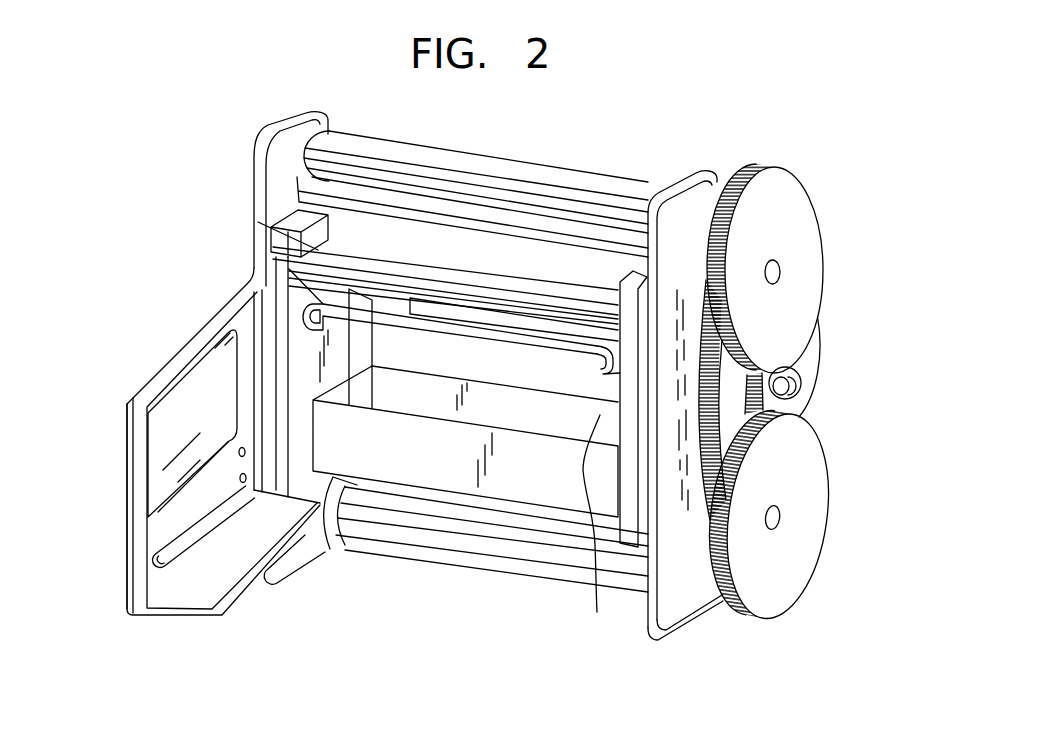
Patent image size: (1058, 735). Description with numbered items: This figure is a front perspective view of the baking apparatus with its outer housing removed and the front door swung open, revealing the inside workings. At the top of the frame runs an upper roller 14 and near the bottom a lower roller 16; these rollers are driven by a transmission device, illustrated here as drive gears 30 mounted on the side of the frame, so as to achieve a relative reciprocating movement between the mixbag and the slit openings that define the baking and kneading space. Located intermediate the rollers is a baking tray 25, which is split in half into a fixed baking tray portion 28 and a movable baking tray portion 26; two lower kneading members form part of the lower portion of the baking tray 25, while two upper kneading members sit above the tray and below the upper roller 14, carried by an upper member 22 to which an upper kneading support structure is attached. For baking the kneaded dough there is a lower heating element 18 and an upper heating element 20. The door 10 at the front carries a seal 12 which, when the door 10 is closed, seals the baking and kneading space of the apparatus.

The door 10 is at (172, 363).
The seal 12 is at (137, 474).
The upper roller 14 is at (489, 170).
The lower roller 16 is at (486, 551).
The lower heating element 18 is at (163, 560).
The upper heating element 20 is at (312, 272).
The upper member 22 is at (316, 255).
The baking tray 25 is at (533, 492).
The movable baking tray portion 26 is at (463, 500).
The fixed baking tray portion 28 is at (597, 532).
The drive gears 30 is at (850, 365).